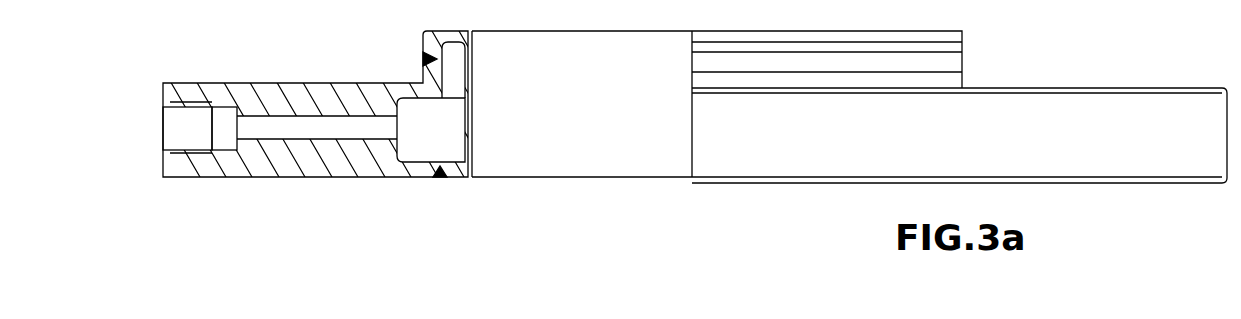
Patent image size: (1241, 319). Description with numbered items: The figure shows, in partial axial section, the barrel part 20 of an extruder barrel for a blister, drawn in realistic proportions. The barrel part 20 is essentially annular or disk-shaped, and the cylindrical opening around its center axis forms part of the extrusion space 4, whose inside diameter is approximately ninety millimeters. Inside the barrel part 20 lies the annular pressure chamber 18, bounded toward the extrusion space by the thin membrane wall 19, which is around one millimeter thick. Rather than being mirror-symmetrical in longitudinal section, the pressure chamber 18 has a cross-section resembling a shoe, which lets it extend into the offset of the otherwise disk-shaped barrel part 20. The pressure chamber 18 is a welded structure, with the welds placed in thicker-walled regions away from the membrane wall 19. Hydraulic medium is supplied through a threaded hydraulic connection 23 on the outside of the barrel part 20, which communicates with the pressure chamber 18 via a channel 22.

The extrusion space 4 is at (620, 148).
The pressure chamber 18 is at (423, 148).
The membrane wall 19 is at (473, 113).
The barrel part 20 is at (1085, 88).
The channel 22 is at (288, 130).
The hydraulic connection 23 is at (178, 136).